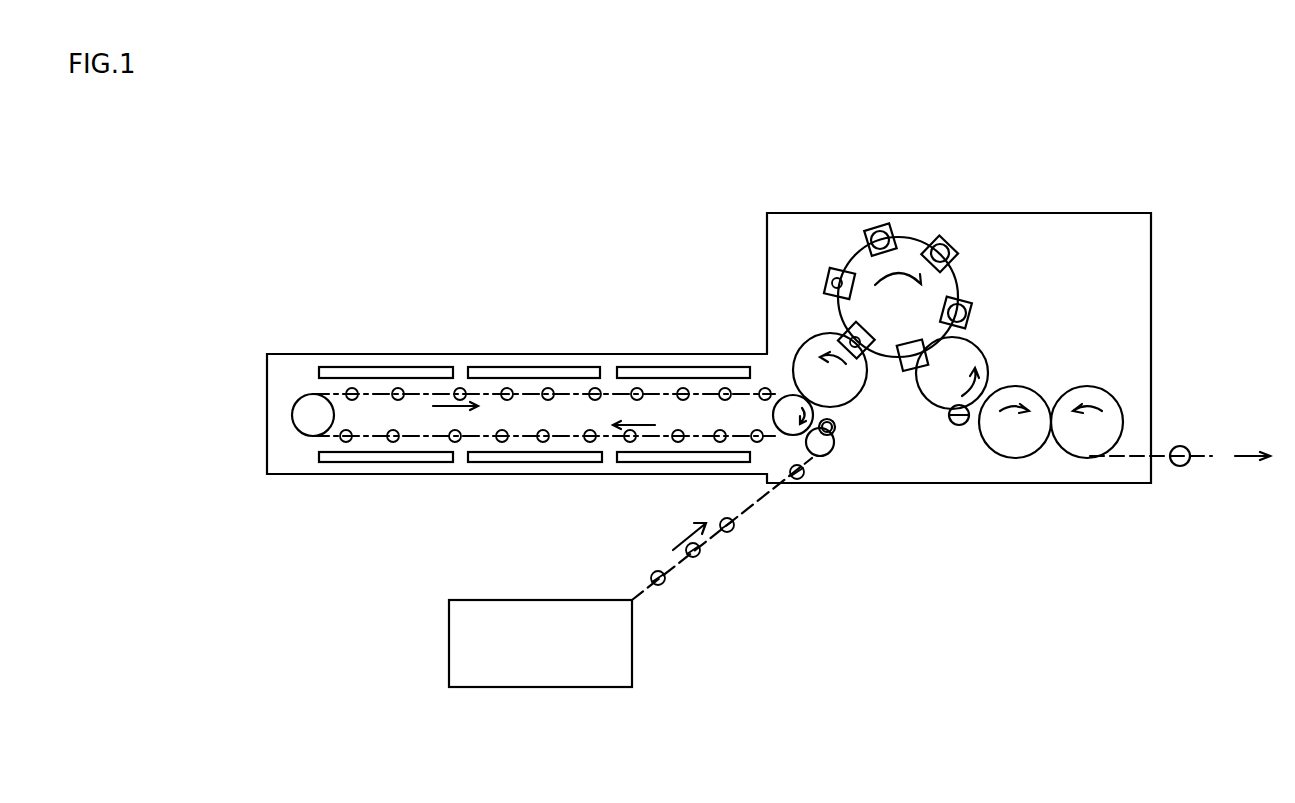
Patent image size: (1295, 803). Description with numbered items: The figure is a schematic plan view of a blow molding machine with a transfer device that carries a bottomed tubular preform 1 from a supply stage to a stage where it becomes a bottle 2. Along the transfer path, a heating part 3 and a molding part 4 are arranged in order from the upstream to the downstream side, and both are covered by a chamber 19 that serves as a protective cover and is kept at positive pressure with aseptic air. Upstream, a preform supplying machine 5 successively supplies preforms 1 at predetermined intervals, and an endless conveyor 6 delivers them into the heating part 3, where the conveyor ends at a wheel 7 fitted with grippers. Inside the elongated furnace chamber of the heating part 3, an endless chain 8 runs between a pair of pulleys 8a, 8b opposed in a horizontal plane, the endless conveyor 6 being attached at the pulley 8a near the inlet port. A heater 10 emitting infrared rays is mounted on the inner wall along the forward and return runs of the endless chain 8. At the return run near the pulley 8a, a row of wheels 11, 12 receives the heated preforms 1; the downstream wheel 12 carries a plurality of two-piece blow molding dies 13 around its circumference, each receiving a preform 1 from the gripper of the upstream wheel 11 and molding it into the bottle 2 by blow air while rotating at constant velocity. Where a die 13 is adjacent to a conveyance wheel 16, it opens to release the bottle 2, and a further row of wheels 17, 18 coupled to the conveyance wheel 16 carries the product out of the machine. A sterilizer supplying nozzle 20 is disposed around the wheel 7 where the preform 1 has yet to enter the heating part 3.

The preform 1 is at (352, 388).
The bottle 2 is at (968, 313).
The heating part 3 is at (436, 340).
The molding part 4 is at (902, 198).
The preform supplying machine 5 is at (552, 687).
The endless conveyor 6 is at (745, 513).
The wheel 7 is at (834, 441).
The endless chain 8 is at (480, 392).
The pulley 8a is at (772, 415).
The pulley 8b is at (303, 433).
The heater 10 is at (582, 366).
The upstream wheel 11 is at (798, 352).
The downstream wheel 12 is at (912, 238).
The blow molding die 13 is at (834, 268).
The conveyance wheel 16 is at (982, 351).
The wheel 17 is at (1015, 386).
The wheel 18 is at (1062, 448).
The chamber 19 is at (988, 213).
The sterilizer supplying nozzle 20 is at (835, 426).